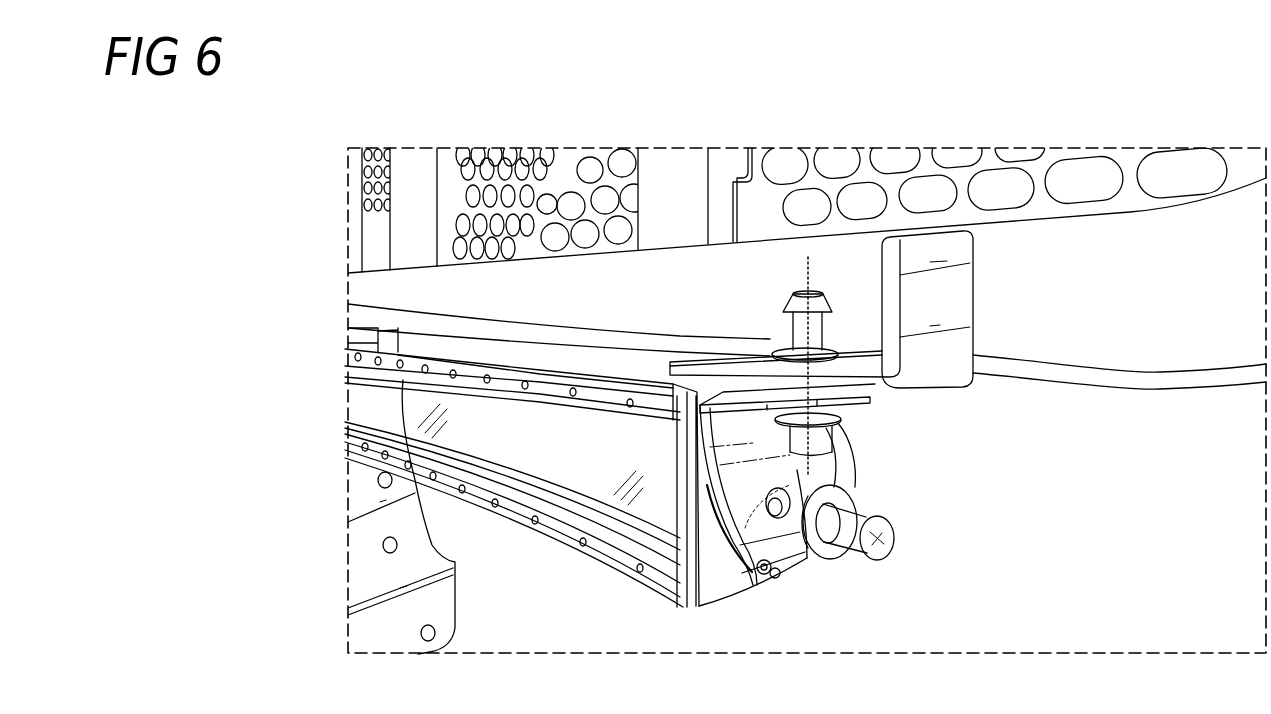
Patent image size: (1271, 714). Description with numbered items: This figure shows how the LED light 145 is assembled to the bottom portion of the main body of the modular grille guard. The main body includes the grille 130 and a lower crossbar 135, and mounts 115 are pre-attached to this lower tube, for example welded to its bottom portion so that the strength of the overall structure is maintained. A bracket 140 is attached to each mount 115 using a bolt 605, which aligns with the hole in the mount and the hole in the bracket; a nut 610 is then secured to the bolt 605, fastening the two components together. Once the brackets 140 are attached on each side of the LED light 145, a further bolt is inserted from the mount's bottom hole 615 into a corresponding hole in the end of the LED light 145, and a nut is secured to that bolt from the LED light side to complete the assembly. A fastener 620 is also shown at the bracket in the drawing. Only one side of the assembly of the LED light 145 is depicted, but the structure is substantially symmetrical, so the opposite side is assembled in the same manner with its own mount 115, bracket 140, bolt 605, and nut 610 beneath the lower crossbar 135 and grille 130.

The grille 130 is at (763, 160).
The mount 115 is at (974, 289).
The lower crossbar 135 is at (1133, 390).
The LED light 145 is at (590, 563).
The bracket 140 is at (787, 546).
The bolt 605 is at (785, 300).
The nut 610 is at (820, 435).
The mount's bottom hole 615 is at (753, 520).
The knob 620 is at (897, 527).